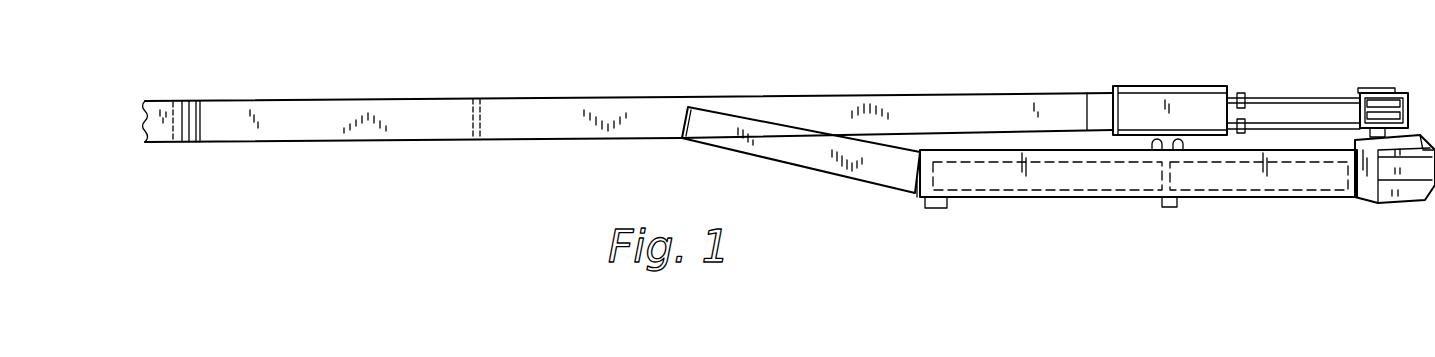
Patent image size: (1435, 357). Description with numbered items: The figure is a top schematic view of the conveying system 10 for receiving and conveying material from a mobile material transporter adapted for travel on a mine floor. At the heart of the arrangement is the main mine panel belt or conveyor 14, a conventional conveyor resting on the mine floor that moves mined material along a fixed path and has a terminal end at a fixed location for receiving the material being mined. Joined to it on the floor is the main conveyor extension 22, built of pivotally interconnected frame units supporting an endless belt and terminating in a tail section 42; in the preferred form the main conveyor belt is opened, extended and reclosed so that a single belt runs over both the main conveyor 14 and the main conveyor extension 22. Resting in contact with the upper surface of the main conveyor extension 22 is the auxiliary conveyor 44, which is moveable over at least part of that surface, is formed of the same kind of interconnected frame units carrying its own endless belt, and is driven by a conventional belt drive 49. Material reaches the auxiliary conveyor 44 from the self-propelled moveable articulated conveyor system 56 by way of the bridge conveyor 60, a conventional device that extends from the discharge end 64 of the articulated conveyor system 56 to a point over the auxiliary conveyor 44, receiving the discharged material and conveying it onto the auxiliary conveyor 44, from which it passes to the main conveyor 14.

The conveying system 10 is at (758, 60).
The main mine panel belt or conveyor 14 is at (160, 133).
The main conveyor extension 22 is at (198, 100).
The tail section 42 is at (183, 100).
The auxiliary conveyor 44 is at (366, 150).
The belt drive 49 is at (1100, 86).
The moveable articulated conveyor system 56 is at (1078, 203).
The bridge conveyor 60 is at (840, 195).
The discharge end 64 is at (926, 186).